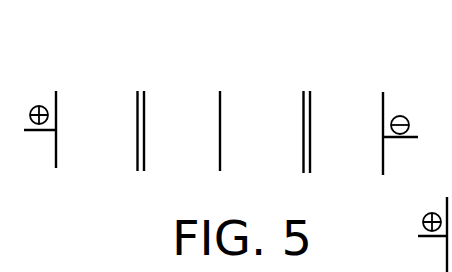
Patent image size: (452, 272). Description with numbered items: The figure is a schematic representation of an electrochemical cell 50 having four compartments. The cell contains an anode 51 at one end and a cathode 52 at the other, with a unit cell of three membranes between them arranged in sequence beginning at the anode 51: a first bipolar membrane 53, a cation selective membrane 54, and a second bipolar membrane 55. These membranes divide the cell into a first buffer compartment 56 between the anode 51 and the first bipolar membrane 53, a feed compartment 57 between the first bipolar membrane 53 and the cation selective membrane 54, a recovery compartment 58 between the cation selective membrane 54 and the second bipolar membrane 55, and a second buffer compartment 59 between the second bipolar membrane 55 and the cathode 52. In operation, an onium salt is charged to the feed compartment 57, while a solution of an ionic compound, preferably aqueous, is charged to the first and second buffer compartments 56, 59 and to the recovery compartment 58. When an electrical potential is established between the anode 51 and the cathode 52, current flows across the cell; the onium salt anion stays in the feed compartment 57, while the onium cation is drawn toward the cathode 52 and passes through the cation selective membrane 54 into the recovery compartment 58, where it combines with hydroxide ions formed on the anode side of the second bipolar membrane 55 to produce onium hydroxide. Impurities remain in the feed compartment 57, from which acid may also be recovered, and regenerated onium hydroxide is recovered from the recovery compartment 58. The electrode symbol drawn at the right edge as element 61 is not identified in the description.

The electrochemical cell 50 is at (421, 103).
The anode 51 is at (47, 115).
The cathode 52 is at (394, 120).
The first bipolar membrane 53 is at (142, 132).
The cation selective membrane 54 is at (221, 132).
The second bipolar membrane 55 is at (307, 134).
The first buffer compartment 56 is at (95, 132).
The feed compartment 57 is at (182, 132).
The recovery compartment 58 is at (262, 135).
The second buffer compartment 59 is at (343, 135).
The positive pulse of next sequence 61 is at (435, 223).